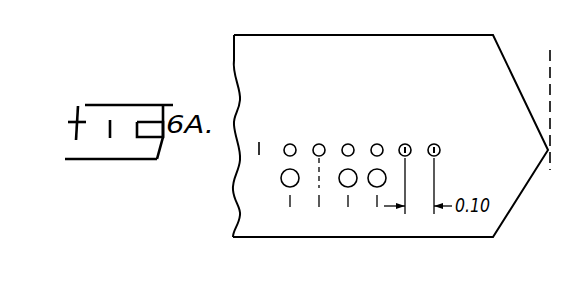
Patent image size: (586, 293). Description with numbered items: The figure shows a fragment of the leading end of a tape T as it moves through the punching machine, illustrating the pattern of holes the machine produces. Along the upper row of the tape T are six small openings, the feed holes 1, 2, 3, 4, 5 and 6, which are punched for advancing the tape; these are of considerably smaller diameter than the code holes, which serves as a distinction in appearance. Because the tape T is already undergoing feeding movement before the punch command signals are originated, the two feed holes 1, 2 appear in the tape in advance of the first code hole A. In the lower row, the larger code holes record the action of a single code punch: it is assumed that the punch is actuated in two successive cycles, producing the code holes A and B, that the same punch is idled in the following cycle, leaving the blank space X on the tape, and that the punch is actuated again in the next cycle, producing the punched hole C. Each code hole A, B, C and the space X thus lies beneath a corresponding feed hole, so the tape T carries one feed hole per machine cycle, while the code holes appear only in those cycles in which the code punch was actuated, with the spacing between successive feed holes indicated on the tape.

The tape T is at (413, 36).
The feed hole 1 is at (434, 165).
The feed hole 2 is at (405, 165).
The feed hole 3 is at (377, 136).
The feed hole 4 is at (348, 136).
The feed hole 5 is at (319, 152).
The feed hole 6 is at (290, 136).
The first code hole A is at (377, 203).
The code hole B is at (348, 203).
The punched code hole C is at (290, 203).
The space X is at (318, 216).